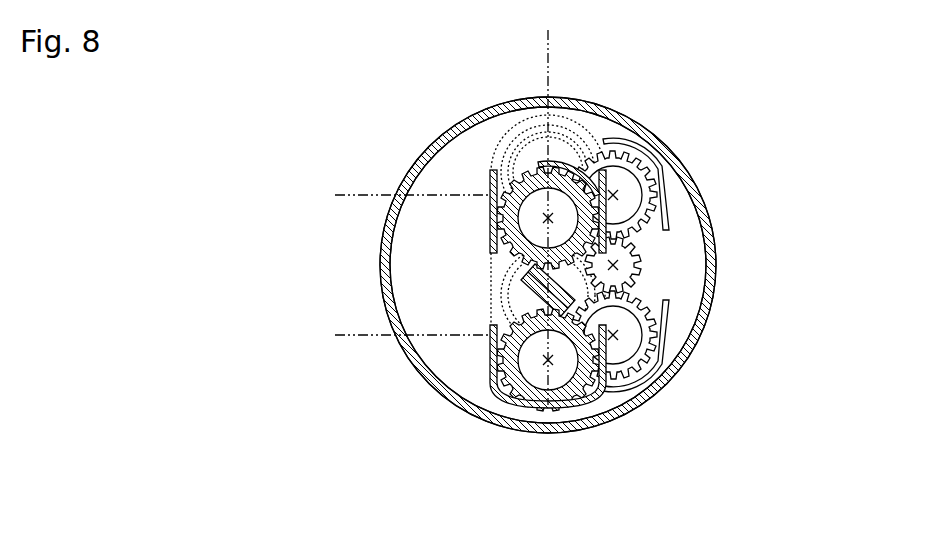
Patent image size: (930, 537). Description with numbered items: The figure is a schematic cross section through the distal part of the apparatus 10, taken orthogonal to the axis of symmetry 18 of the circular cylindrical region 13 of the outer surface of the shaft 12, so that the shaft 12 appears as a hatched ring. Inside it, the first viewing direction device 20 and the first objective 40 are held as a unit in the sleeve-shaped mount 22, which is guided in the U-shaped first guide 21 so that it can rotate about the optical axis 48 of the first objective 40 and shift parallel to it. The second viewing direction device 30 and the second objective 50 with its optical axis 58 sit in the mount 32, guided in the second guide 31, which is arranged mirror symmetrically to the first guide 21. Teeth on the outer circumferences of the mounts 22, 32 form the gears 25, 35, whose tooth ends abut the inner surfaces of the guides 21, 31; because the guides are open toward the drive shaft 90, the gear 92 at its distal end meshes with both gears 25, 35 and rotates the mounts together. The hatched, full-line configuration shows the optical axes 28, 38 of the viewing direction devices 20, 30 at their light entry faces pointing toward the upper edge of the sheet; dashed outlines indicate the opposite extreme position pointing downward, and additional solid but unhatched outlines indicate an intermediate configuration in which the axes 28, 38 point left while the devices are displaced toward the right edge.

The apparatus 10 is at (292, 75).
The shaft 12 is at (490, 196).
The circular cylindrical region 13 is at (406, 176).
The second guide 31 is at (490, 203).
The second viewing direction device 30 is at (513, 208).
The second objective 50 is at (548, 218).
The mount 32 is at (531, 191).
The gear 35 is at (535, 175).
The optical axis 58 is at (538, 200).
The optical axis 38 is at (362, 194).
The optical axis 28 is at (362, 334).
The drive shaft 90 is at (527, 277).
The gear 92 is at (548, 295).
The axis of symmetry 18 is at (540, 291).
The first guide 21 is at (493, 374).
The first viewing direction device 20 is at (522, 379).
The first objective 40 is at (548, 360).
The mount 22 is at (538, 384).
The gear 25 is at (550, 393).
The optical axis 48 is at (548, 372).